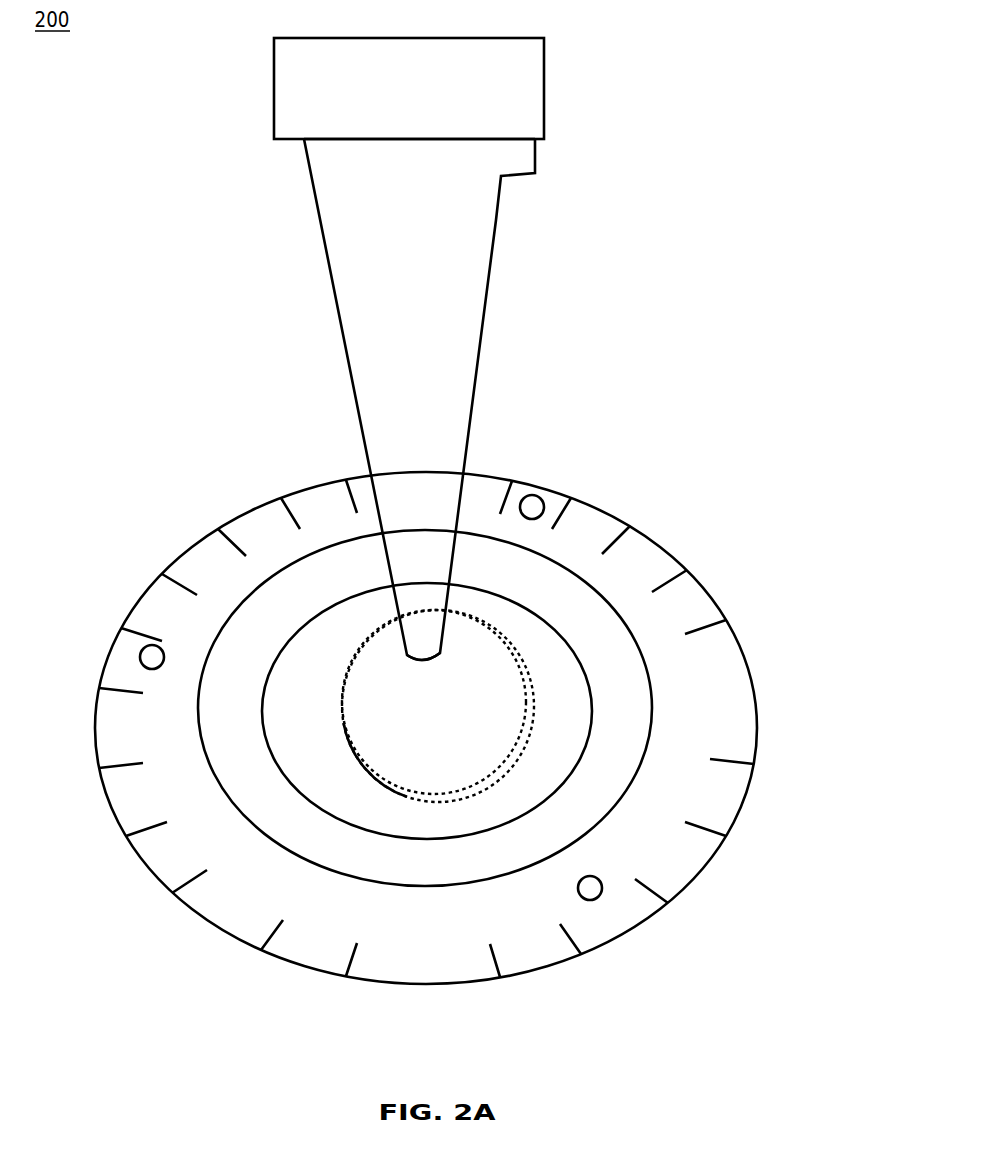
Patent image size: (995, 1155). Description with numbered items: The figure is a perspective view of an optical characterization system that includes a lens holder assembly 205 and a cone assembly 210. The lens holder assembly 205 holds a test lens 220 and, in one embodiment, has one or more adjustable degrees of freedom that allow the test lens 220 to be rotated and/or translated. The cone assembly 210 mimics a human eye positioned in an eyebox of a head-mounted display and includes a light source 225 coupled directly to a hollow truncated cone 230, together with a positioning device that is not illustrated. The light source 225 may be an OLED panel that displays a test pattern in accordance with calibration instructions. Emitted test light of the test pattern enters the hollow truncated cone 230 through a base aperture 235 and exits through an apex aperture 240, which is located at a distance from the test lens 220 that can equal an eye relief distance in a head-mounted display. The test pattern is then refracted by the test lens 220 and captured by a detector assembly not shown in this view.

The lens holder assembly 205 is at (672, 553).
The cone assembly 210 is at (305, 665).
The test lens 220 is at (505, 760).
The light source 225 is at (443, 80).
The hollow truncated cone 230 is at (428, 337).
The base aperture 235 is at (425, 141).
The apex aperture 240 is at (432, 657).